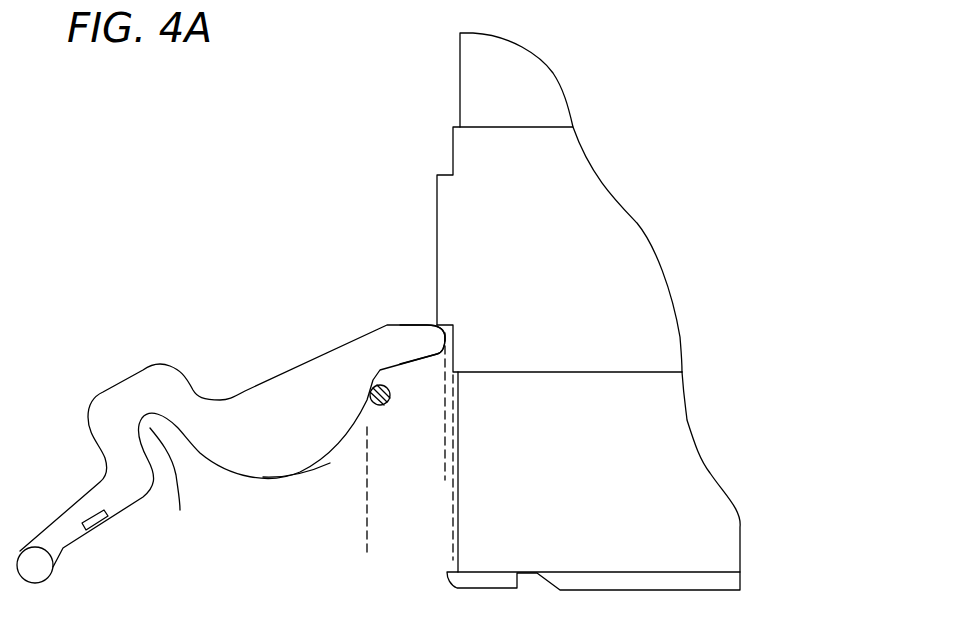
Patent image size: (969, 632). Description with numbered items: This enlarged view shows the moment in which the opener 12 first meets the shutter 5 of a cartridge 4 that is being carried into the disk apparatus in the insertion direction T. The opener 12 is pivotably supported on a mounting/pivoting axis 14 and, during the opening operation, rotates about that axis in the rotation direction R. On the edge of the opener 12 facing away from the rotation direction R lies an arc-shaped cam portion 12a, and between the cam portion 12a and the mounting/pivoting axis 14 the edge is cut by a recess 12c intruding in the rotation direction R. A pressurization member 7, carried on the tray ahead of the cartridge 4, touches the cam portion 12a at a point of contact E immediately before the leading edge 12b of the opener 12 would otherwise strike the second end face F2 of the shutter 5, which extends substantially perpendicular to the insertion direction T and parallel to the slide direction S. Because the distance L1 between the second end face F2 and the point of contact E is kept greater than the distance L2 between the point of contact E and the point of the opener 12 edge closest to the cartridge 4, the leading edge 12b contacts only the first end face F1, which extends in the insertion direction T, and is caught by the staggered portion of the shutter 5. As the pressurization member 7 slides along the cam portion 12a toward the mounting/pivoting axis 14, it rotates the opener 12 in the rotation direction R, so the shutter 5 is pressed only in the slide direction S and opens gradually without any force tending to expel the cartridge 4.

The cartridge 4 is at (683, 547).
The shutter 5 is at (563, 212).
The pressurization member 7 is at (373, 402).
The opener 12 is at (240, 410).
The cam portion 12a is at (290, 480).
The leading edge 12b is at (435, 335).
The recess 12c is at (180, 510).
The mounting/pivoting axis 14 is at (35, 565).
The point of contact E is at (358, 388).
The first end face F1 is at (442, 320).
The second end face F2 is at (458, 352).
The distance between second end face and point of contact L1 is at (453, 530).
The distance between point of contact and opener edge point L2 is at (445, 455).
The rotation direction R is at (287, 190).
The slide direction S is at (749, 223).
The insertion direction T is at (749, 223).